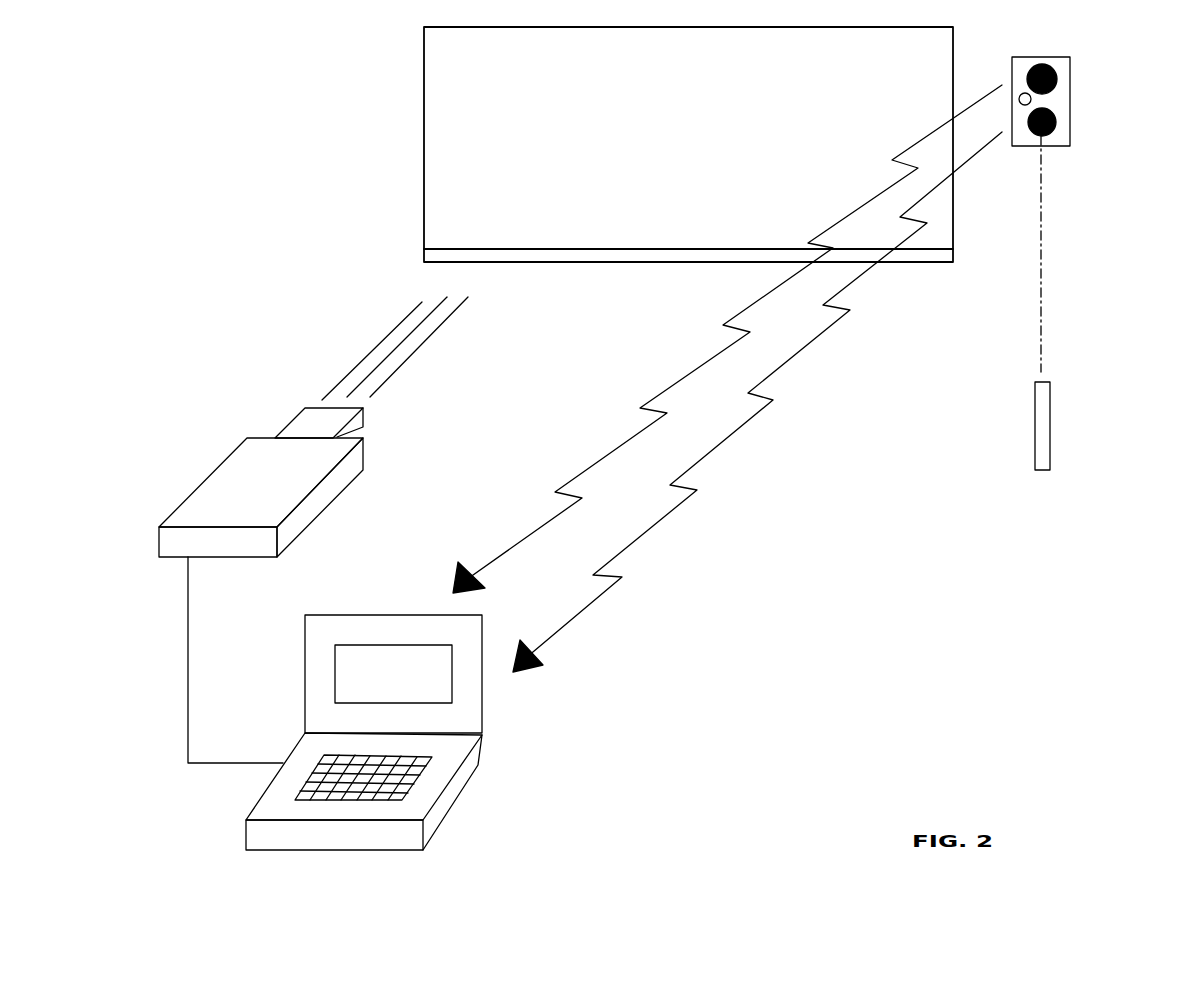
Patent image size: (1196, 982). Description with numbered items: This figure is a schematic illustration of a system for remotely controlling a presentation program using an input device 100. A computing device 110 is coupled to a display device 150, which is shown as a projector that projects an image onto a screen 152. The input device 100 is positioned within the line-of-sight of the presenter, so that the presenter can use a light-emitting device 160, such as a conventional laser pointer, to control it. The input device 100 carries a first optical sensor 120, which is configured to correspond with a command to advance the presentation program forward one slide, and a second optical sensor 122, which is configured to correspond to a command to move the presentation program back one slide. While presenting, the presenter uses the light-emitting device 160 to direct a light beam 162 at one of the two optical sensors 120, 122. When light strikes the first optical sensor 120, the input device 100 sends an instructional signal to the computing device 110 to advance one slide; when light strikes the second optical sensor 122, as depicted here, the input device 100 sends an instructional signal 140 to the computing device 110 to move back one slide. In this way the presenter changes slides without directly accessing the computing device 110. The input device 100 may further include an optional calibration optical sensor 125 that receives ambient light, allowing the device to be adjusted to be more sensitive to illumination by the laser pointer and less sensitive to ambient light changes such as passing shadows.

The input device 100 is at (1070, 95).
The computing device 110 is at (460, 793).
The optical sensor 120 is at (1042, 64).
The optical sensor 122 is at (1056, 118).
The calibration optical sensor 125 is at (1022, 93).
The instructional signal 140 is at (727, 440).
The display device 150 is at (225, 460).
The screen 152 is at (424, 115).
The light-emitting device 160 is at (1050, 417).
The light beam 162 is at (1042, 268).